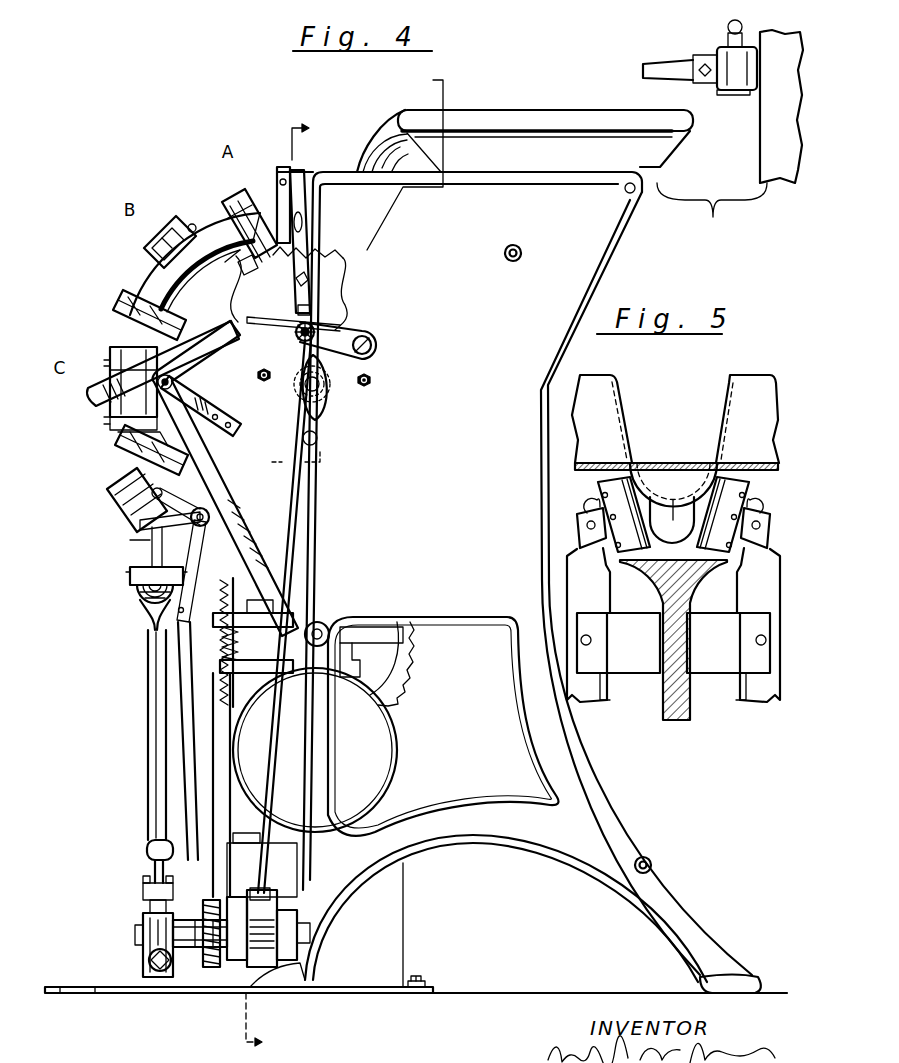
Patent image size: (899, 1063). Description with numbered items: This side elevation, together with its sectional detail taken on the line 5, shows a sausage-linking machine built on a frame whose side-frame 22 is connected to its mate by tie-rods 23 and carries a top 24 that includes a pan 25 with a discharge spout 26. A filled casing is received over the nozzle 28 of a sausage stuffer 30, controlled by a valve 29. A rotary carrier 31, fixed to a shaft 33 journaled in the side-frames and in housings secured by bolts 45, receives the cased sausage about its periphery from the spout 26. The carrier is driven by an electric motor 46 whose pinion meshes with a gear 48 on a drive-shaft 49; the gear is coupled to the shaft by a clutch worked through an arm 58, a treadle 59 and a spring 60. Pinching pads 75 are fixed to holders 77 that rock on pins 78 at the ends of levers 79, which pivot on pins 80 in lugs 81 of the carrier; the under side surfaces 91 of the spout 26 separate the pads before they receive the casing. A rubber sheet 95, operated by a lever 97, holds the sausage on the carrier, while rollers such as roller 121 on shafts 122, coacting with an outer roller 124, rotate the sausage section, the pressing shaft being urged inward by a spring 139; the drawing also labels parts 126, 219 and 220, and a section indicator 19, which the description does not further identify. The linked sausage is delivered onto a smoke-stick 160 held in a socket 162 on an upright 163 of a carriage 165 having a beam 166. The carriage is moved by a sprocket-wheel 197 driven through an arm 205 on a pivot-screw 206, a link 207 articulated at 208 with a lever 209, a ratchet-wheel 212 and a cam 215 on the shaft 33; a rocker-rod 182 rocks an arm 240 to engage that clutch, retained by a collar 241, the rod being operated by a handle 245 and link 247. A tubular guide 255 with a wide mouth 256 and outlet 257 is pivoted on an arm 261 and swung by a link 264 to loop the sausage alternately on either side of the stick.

In FIG. 4, the section line 5 is at (396, 164).
In FIG. 4, the section line 19- 19 is at (288, 585).
In FIG. 4, the side-frame 22 is at (458, 604).
In FIG. 4, the tie-rods 23 is at (522, 251).
In FIG. 4, the top 24 is at (530, 175).
In FIG. 4, the pan 25 is at (605, 130).
In FIG. 5, the pan 25 is at (725, 414).
In FIG. 4, the discharge spout 26 is at (382, 135).
In FIG. 4, the nozzle 28 is at (672, 72).
In FIG. 4, the valve 29 is at (740, 92).
In FIG. 4, the sausage stuffer 30 is at (794, 36).
In FIG. 4, the rotary carrier 31 is at (222, 258).
In FIG. 5, the rotary carrier 31 is at (686, 713).
In FIG. 4, the shaft 33 is at (298, 418).
In FIG. 4, the bolts 45 is at (268, 368).
In FIG. 4, the electric motor 46 is at (383, 728).
In FIG. 4, the gear 48 is at (408, 680).
In FIG. 4, the drive-shaft 49 is at (322, 624).
In FIG. 4, the arm 58 is at (228, 755).
In FIG. 4, the treadle 59 is at (70, 1003).
In FIG. 4, the spring 60 is at (222, 650).
In FIG. 4, the pads 75 is at (236, 195).
In FIG. 5, the pads 75 is at (688, 504).
In FIG. 5, the holder 77 is at (580, 537).
In FIG. 5, the pin 78 is at (590, 522).
In FIG. 4, the lever 79 is at (260, 262).
In FIG. 5, the lever 79 is at (572, 582).
In FIG. 5, the pin 80 is at (592, 641).
In FIG. 5, the lugs 81 is at (622, 674).
In FIG. 5, the under side surfaces 91 is at (672, 538).
In FIG. 4, the rubber sheet 95 is at (186, 224).
In FIG. 4, the lever 97 is at (150, 236).
In FIG. 4, the roller 121 is at (125, 420).
In FIG. 4, the shaft 122 is at (130, 436).
In FIG. 4, the outer roller 124 is at (308, 168).
In FIG. 4, the arm 126 is at (195, 338).
In FIG. 4, the spring 139 is at (200, 405).
In FIG. 4, the smoke-stick 160 is at (148, 612).
In FIG. 4, the socket 162 is at (136, 594).
In FIG. 4, the upright 163 is at (148, 710).
In FIG. 4, the carriage 165 is at (150, 860).
In FIG. 4, the beam 166 is at (150, 872).
In FIG. 4, the rocker-rod 182 is at (178, 975).
In FIG. 4, the sprocket-wheel 197 is at (211, 970).
In FIG. 4, the arm 205 is at (355, 330).
In FIG. 4, the pivot-screw 206 is at (376, 348).
In FIG. 4, the link 207 is at (292, 530).
In FIG. 4, the articulation 208 is at (325, 310).
In FIG. 4, the lever 209 is at (285, 896).
In FIG. 4, the ratchet-wheel 212 is at (275, 965).
In FIG. 4, the cam 215 is at (328, 402).
In FIG. 4, the rod 219 is at (300, 272).
In FIG. 4, the pin 220 is at (305, 282).
In FIG. 4, the arm 240 is at (160, 975).
In FIG. 4, the collar 241 is at (142, 920).
In FIG. 4, the handle 245 is at (205, 620).
In FIG. 4, the link 247 is at (188, 720).
In FIG. 4, the guide 255 is at (135, 524).
In FIG. 4, the wide mouth 256 is at (116, 498).
In FIG. 4, the outlet 257 is at (140, 548).
In FIG. 4, the arm 261 is at (225, 522).
In FIG. 4, the link 264 is at (128, 572).